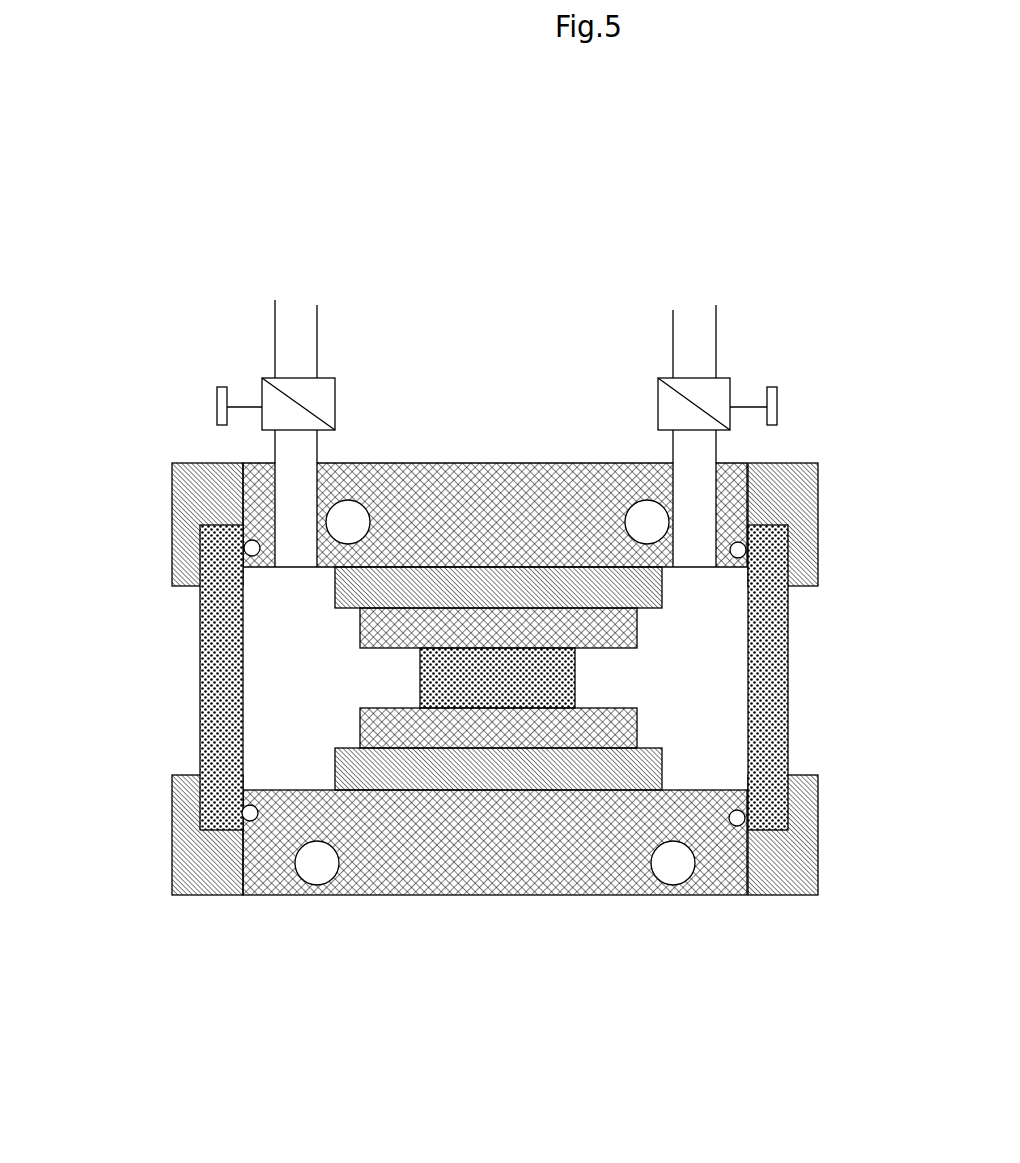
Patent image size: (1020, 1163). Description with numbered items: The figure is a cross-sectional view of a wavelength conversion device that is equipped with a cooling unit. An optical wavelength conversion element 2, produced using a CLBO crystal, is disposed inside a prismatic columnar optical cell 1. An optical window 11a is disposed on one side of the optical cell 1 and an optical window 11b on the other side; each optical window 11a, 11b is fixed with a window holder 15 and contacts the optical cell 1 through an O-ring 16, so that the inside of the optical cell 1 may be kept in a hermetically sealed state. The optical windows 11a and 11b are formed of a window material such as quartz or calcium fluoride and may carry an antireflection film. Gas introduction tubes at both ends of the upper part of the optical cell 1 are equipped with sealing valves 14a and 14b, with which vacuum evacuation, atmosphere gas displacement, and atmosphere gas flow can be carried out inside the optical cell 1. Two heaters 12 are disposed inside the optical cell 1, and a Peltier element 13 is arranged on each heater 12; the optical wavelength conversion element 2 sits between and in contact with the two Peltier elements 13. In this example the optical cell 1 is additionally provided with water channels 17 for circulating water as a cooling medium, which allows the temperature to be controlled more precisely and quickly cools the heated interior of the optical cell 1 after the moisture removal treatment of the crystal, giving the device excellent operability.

The optical cell 1 is at (412, 503).
The optical wavelength conversion element 2 is at (537, 695).
The optical window 11a is at (230, 787).
The optical window 11b is at (773, 787).
The heater 12 is at (482, 590).
The Peltier element 13 is at (593, 633).
The sealing valve 14a is at (273, 405).
The sealing valve 14b is at (710, 407).
The window holder 15 is at (185, 853).
The O-ring 16 is at (260, 816).
The water channel 17 is at (660, 498).